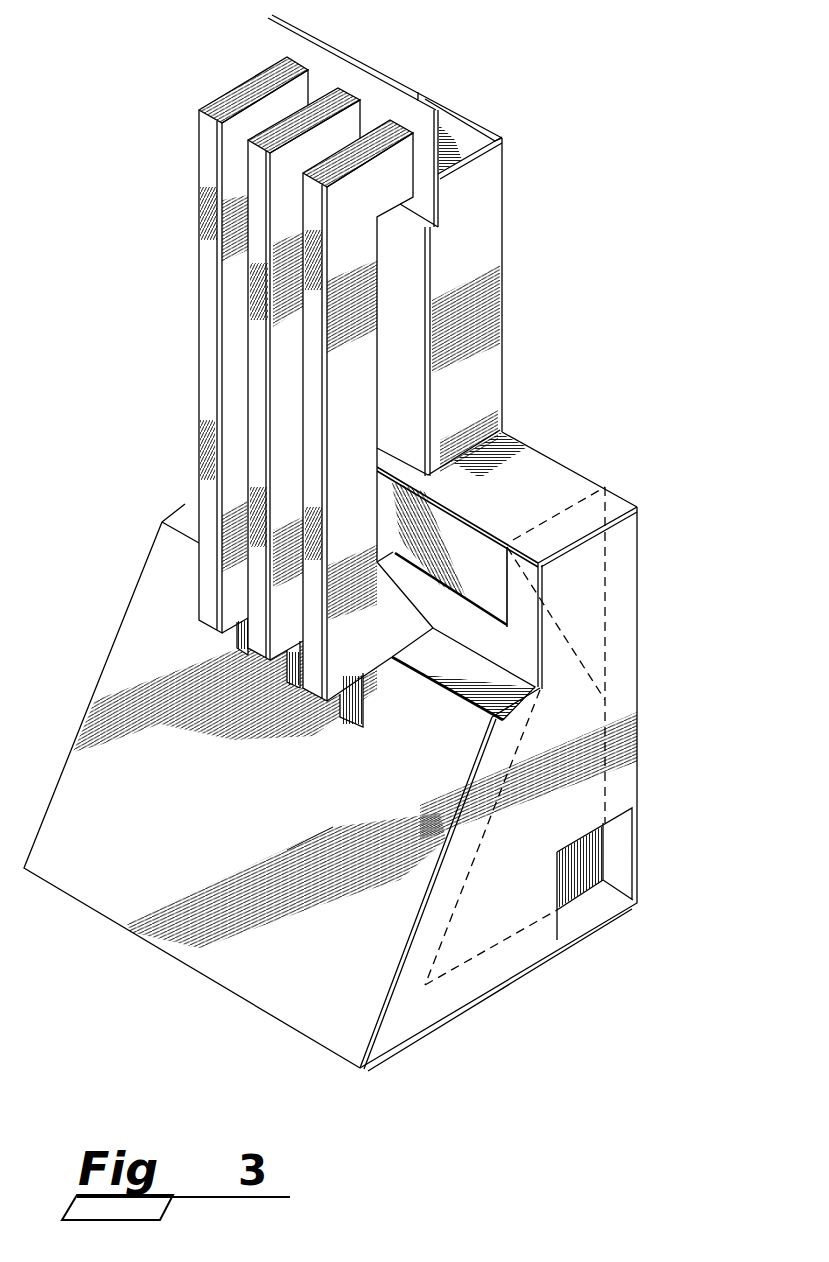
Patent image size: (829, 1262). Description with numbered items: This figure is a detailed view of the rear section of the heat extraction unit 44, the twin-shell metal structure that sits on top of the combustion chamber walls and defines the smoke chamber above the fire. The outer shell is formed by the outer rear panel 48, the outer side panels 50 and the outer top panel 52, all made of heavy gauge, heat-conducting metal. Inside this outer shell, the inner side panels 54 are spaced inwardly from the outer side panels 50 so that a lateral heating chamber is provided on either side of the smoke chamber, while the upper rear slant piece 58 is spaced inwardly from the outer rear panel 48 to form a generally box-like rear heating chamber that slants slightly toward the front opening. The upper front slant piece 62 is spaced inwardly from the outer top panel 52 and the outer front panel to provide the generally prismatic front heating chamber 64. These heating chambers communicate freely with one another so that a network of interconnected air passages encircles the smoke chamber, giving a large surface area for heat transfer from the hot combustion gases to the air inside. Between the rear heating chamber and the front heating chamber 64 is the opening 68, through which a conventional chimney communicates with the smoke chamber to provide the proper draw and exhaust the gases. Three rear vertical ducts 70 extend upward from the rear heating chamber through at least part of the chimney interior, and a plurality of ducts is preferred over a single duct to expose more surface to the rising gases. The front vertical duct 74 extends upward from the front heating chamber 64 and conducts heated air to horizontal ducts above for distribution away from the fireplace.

The heat extraction unit 44 is at (566, 315).
The outer rear panel 48 is at (221, 812).
The outer side panels 50 is at (621, 650).
The outer top panel 52 is at (549, 484).
The inner side panels 54 is at (606, 587).
The upper rear slant piece 58 is at (487, 833).
The upper front slant piece 62 is at (492, 567).
The front heating chamber 64 is at (562, 510).
The opening 68 is at (493, 637).
The rear vertical ducts 70 is at (313, 420).
The front vertical duct 74 is at (470, 232).